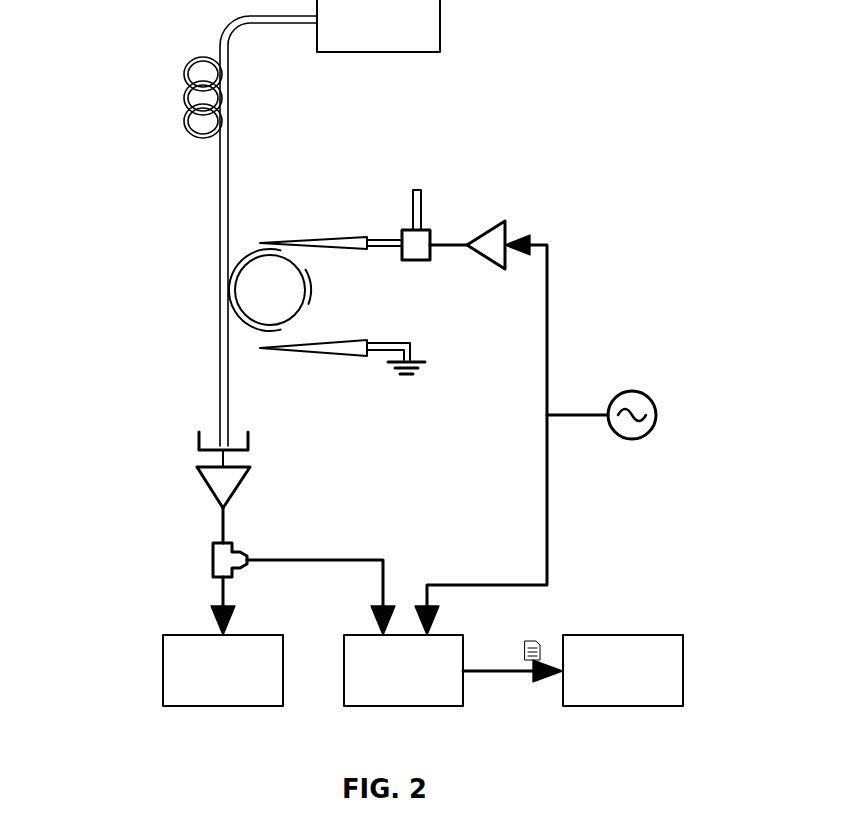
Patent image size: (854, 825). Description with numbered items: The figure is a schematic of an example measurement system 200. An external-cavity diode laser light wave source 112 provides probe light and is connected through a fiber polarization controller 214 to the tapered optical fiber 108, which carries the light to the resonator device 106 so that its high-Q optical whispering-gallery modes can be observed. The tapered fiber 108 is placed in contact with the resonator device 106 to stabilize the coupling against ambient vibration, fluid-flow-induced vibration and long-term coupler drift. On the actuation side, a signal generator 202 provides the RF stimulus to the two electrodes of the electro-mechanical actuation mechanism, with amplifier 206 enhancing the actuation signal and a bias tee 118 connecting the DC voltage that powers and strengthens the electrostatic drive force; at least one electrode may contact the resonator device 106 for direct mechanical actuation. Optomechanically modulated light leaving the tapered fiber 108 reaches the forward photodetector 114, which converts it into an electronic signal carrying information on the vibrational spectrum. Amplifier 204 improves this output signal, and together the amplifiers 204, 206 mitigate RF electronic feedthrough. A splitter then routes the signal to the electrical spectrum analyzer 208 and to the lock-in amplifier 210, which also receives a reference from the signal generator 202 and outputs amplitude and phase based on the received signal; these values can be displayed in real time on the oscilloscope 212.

The measurement system 200 is at (600, 46).
The external-cavity diode laser light wave source 112 is at (378, 52).
The tapered optical fiber 108 is at (222, 190).
The fiber polarization controller 214 is at (222, 108).
The resonator device 106 is at (313, 283).
The bias tee 118 is at (465, 219).
The amplifier 206 is at (510, 230).
The signal generator 202 is at (656, 412).
The photodetector 114 is at (249, 445).
The amplifier 204 is at (240, 487).
The electrical spectrum analyzer 208 is at (223, 707).
The lock-in amplifier 210 is at (405, 707).
The oscilloscope 212 is at (622, 707).